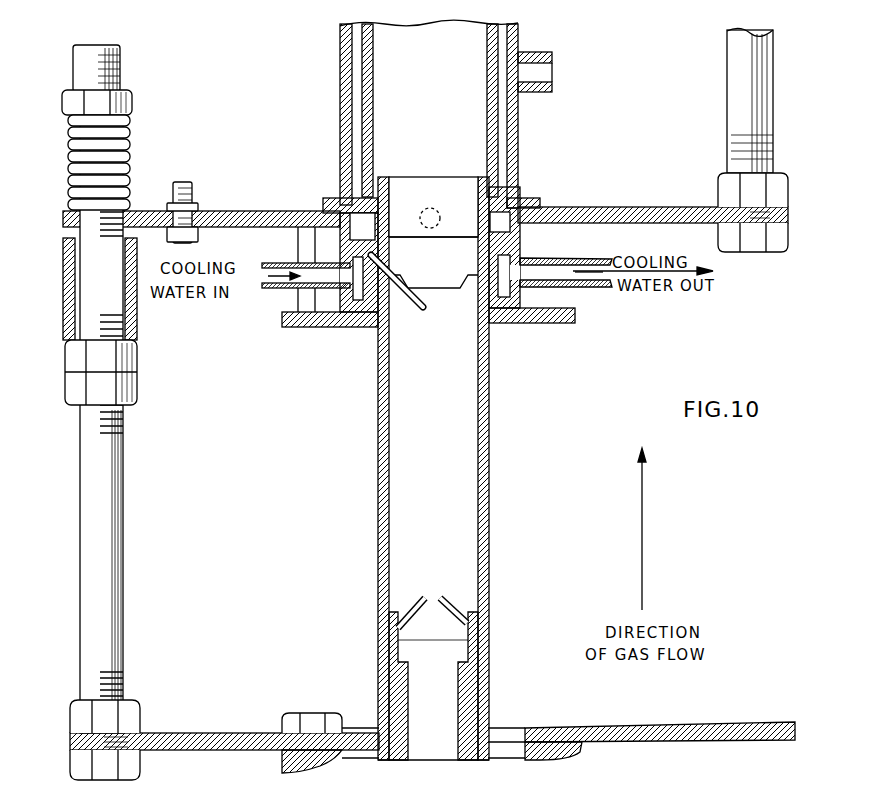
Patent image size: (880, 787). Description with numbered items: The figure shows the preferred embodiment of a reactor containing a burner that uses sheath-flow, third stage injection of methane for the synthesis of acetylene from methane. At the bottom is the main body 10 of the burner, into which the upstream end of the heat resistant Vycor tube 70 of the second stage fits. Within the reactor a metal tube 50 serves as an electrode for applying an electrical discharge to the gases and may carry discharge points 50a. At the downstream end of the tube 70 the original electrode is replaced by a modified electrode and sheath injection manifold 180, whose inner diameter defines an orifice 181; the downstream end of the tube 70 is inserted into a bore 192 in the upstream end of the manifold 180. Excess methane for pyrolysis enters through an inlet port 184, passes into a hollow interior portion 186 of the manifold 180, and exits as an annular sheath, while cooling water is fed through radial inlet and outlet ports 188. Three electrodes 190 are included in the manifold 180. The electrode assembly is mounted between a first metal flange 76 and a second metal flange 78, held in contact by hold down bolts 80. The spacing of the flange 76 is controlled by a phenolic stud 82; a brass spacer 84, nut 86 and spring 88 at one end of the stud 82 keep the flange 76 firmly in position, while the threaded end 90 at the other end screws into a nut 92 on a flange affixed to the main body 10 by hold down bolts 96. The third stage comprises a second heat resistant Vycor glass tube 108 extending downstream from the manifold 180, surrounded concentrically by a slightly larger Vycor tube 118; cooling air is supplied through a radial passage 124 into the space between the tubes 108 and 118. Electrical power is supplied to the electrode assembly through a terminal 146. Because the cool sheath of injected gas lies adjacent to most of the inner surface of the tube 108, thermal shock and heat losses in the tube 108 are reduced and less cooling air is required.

The main body 10 is at (582, 750).
The metal tube 50 is at (458, 678).
The discharge points 50a is at (440, 598).
The heat resistant Vycor tube 70 is at (489, 384).
The first metal flange 76 is at (231, 212).
The second metal flange 78 is at (283, 326).
The hold down bolts 80 is at (298, 242).
The phenolic stud 82 is at (115, 508).
The brass spacer 84 is at (131, 361).
The nut 86 is at (131, 98).
The spring 88 is at (130, 138).
The threaded end 90 is at (122, 680).
The nut 92 is at (138, 717).
The hold down bolts 96 is at (303, 720).
The second heat resistant Vycor glass tube 108 is at (487, 129).
The Vycor tube 118 is at (519, 156).
The radial passage 124 is at (552, 93).
The terminal 146 is at (188, 187).
The electrode and sheath injection manifold 180 is at (521, 225).
The orifice 181 is at (441, 290).
The inlet port 184 is at (431, 207).
The hollow interior portion 186 is at (531, 186).
The radial inlet and outlet ports 188 is at (268, 290).
The electrodes 190 is at (423, 307).
The bore 192 is at (370, 318).